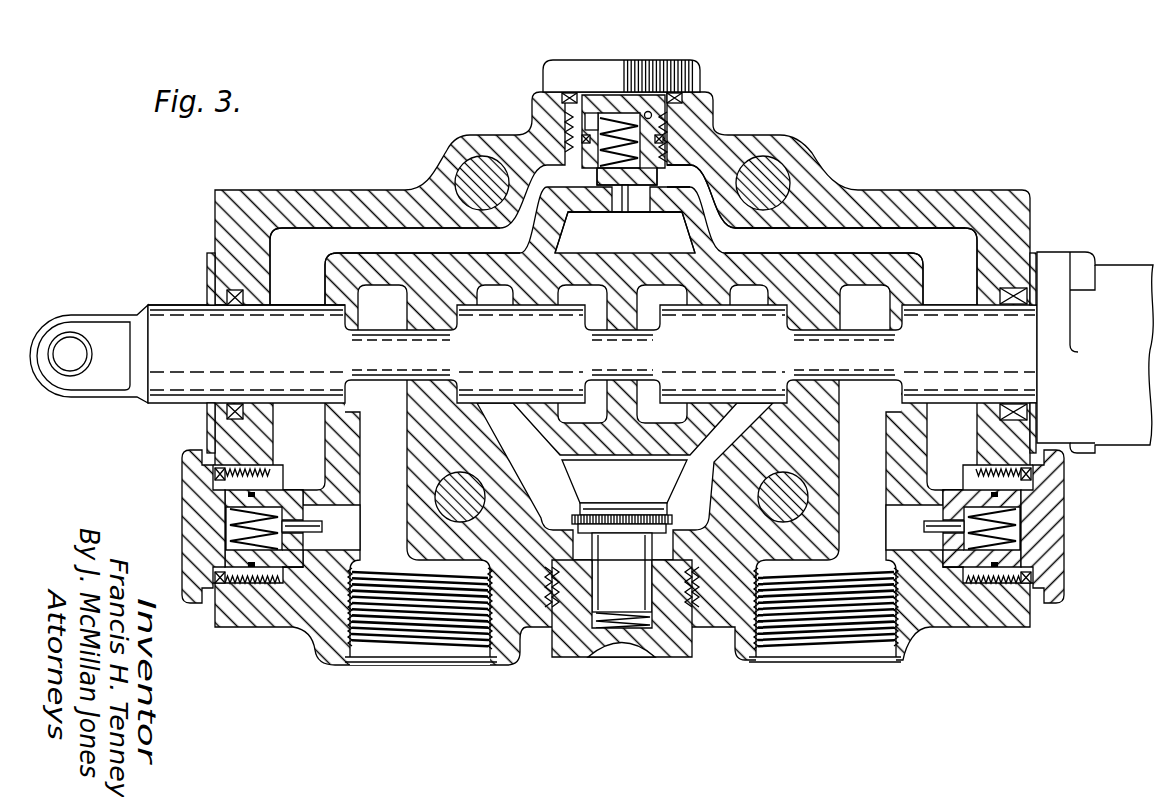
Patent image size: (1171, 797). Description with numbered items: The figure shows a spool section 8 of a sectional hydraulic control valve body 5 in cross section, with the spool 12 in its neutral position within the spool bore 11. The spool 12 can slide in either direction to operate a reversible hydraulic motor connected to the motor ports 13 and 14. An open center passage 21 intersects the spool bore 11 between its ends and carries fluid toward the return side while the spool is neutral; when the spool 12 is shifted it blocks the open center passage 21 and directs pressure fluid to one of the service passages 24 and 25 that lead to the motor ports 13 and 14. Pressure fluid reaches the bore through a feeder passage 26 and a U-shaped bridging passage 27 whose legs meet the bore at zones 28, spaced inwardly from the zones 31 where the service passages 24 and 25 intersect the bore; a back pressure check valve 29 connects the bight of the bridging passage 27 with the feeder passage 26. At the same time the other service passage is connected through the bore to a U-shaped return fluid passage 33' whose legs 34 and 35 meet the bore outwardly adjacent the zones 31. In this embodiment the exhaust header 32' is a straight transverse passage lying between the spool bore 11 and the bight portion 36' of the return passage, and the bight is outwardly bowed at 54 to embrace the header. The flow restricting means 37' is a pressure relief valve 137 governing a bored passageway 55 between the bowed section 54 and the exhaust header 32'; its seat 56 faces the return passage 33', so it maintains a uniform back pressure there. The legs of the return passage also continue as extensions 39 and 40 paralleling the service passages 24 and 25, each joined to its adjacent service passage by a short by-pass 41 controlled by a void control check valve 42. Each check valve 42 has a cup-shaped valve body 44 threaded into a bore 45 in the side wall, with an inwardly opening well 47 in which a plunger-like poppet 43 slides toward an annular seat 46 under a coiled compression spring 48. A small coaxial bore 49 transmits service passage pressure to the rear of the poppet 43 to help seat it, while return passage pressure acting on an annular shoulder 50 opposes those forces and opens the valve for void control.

The control valve body 5 is at (877, 127).
The spool section 8 is at (975, 190).
The spool bore 11 is at (320, 318).
The spool 12 is at (252, 362).
The motor port 13 is at (423, 633).
The motor port 14 is at (830, 630).
The open center passage 21 is at (573, 310).
The service passage 24 is at (373, 442).
The service passage 25 is at (856, 442).
The feeder passage 26 is at (612, 491).
The bridging passage 27 is at (708, 507).
The zones of the spool bore 28 is at (485, 308).
The back pressure check valve 29 is at (634, 518).
The zones 31 is at (370, 320).
The exhaust header 32' is at (625, 232).
The return fluid passage 33' is at (845, 203).
The leg of return fluid passage 34 is at (281, 292).
The leg of return fluid passage 35 is at (935, 282).
The bight portion 36' is at (623, 198).
The flow restricting means 37' is at (713, 152).
The pressure relief valve 137 is at (695, 142).
The extension of return fluid passage 39 is at (283, 431).
The extension of return fluid passage 40 is at (940, 431).
The by-pass 41 is at (343, 508).
The void control check valve 42 is at (283, 567).
The poppet 43 is at (964, 490).
The valve body 44 is at (598, 90).
The bore 45 is at (566, 125).
The annular seat 46 is at (303, 568).
The well 47 is at (647, 108).
The coiled compression spring 48 is at (614, 112).
The coaxial bore 49 is at (627, 206).
The annular shoulder 50 is at (596, 176).
The bowed section 54 is at (518, 166).
The bored passageway 55 is at (610, 198).
The seat 56 is at (656, 180).